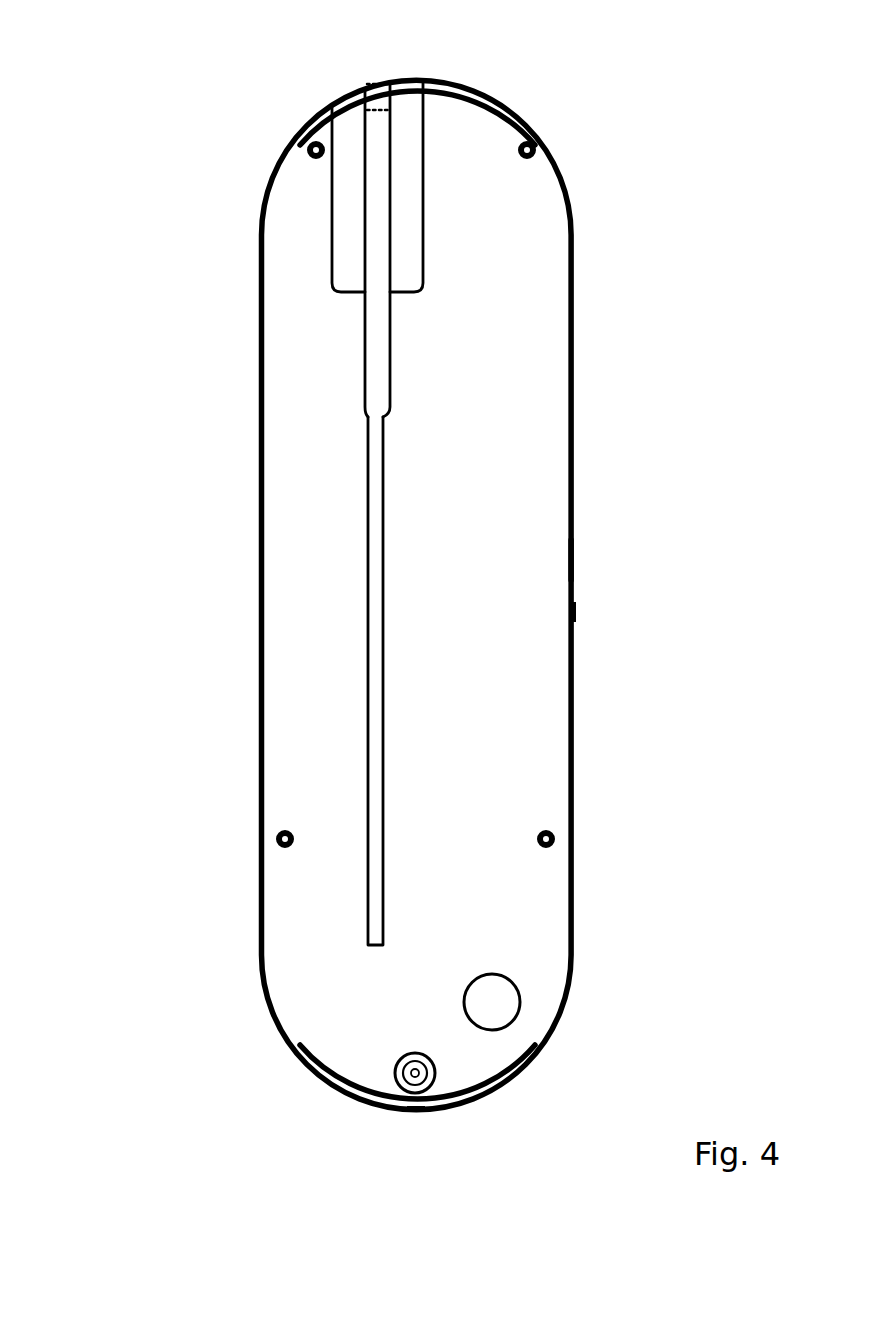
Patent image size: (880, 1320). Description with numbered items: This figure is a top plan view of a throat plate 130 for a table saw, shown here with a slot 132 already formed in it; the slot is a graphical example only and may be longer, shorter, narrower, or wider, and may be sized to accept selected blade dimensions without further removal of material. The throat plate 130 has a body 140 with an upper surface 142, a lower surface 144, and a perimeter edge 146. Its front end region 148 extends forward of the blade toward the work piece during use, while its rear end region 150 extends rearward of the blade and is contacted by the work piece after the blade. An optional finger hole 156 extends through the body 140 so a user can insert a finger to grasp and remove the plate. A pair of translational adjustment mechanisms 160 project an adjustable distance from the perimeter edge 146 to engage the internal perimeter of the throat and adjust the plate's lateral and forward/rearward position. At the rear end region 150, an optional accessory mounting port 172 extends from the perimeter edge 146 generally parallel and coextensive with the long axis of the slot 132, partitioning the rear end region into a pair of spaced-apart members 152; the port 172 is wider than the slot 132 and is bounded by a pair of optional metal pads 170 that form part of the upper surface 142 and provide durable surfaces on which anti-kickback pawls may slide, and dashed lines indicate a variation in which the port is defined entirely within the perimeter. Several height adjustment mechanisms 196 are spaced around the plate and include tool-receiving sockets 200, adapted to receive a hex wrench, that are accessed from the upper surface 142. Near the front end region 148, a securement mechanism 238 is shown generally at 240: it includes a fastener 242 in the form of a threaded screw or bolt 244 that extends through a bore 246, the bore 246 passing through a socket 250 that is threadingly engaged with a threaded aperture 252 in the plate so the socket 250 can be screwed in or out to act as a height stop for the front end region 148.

The throat plate 130 is at (108, 180).
The slot 132 is at (378, 660).
The body 140 is at (577, 525).
The upper surface 142 is at (475, 553).
The lower surface 144 is at (573, 588).
The perimeter edge 146 is at (573, 568).
The front end region 148 is at (457, 1082).
The rear end region 150 is at (462, 113).
The spaced-apart members 152 is at (317, 128).
The finger hole 156 is at (515, 998).
The translational adjustment mechanisms 160 is at (575, 612).
The metal pads 170 is at (350, 112).
The accessory mounting port 172 is at (378, 312).
The height adjustment mechanisms 196 is at (310, 160).
The tool-receiving sockets 200 is at (307, 147).
The securement mechanism 238 is at (372, 1047).
The securement mechanism 240 is at (392, 1064).
The fastener 242 is at (412, 1053).
The threaded screw or bolt 244 is at (423, 1057).
The bore 246 is at (407, 1090).
The socket 250 is at (403, 1083).
The threaded aperture 252 is at (393, 1077).